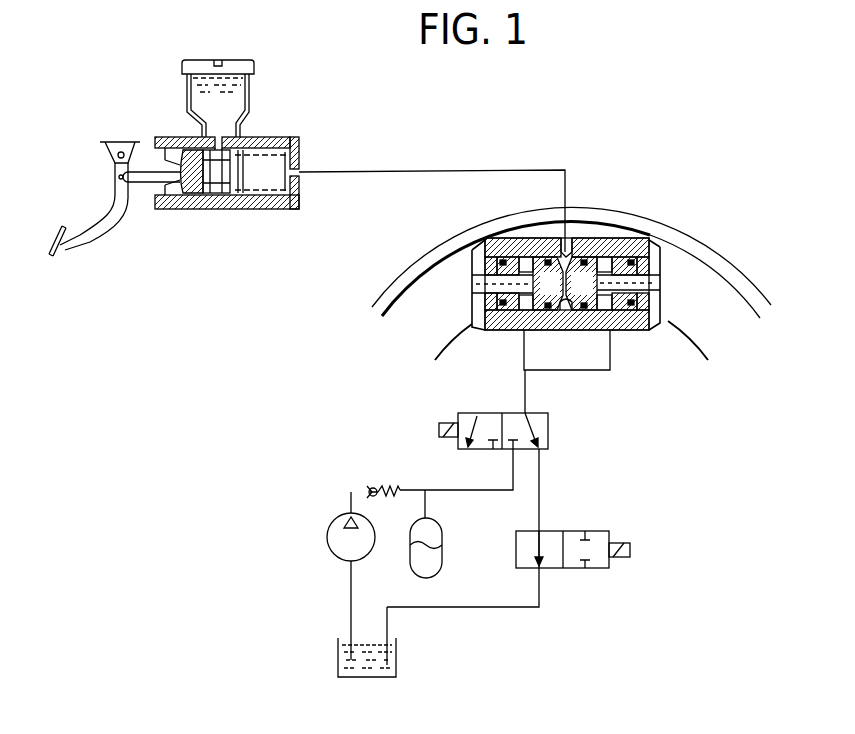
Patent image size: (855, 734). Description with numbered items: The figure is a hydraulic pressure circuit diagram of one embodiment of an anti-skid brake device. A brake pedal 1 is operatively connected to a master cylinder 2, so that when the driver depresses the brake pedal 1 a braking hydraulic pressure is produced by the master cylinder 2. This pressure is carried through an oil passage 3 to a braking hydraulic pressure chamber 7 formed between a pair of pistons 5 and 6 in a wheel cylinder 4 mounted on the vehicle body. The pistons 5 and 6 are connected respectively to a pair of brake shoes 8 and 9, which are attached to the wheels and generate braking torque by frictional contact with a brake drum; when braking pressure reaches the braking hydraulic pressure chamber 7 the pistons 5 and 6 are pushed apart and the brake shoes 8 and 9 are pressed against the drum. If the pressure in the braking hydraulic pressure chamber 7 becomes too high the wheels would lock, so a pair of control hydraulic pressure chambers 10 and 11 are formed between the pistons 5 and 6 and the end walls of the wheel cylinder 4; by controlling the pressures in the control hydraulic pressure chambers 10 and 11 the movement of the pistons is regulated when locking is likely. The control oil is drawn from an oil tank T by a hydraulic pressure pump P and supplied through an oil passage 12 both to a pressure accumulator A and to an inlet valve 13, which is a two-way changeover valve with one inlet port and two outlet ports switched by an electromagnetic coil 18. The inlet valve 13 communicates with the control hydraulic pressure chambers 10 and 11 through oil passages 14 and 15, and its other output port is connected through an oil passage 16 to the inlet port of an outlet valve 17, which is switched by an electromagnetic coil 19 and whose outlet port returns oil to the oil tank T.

The brake pedal 1 is at (58, 250).
The master cylinder 2 is at (278, 137).
The oil passage 3 is at (418, 170).
The wheel cylinder 4 is at (566, 270).
The piston 5 is at (556, 296).
The piston 6 is at (588, 296).
The braking hydraulic pressure chamber 7 is at (565, 330).
The brake shoe 8 is at (441, 326).
The brake shoe 9 is at (716, 326).
The control hydraulic pressure chamber 10 is at (528, 256).
The control hydraulic pressure chamber 11 is at (602, 256).
The oil passage 12 is at (416, 490).
The inlet valve 13 is at (550, 431).
The oil passage 14 is at (524, 355).
The oil passage 15 is at (610, 350).
The oil passage 16 is at (541, 480).
The outlet valve 17 is at (601, 528).
The electromagnetic coil 18 is at (445, 423).
The electromagnetic coil 19 is at (618, 560).
The pressure accumulator A is at (442, 547).
The hydraulic pressure pump P is at (327, 537).
The oil tank T is at (338, 652).